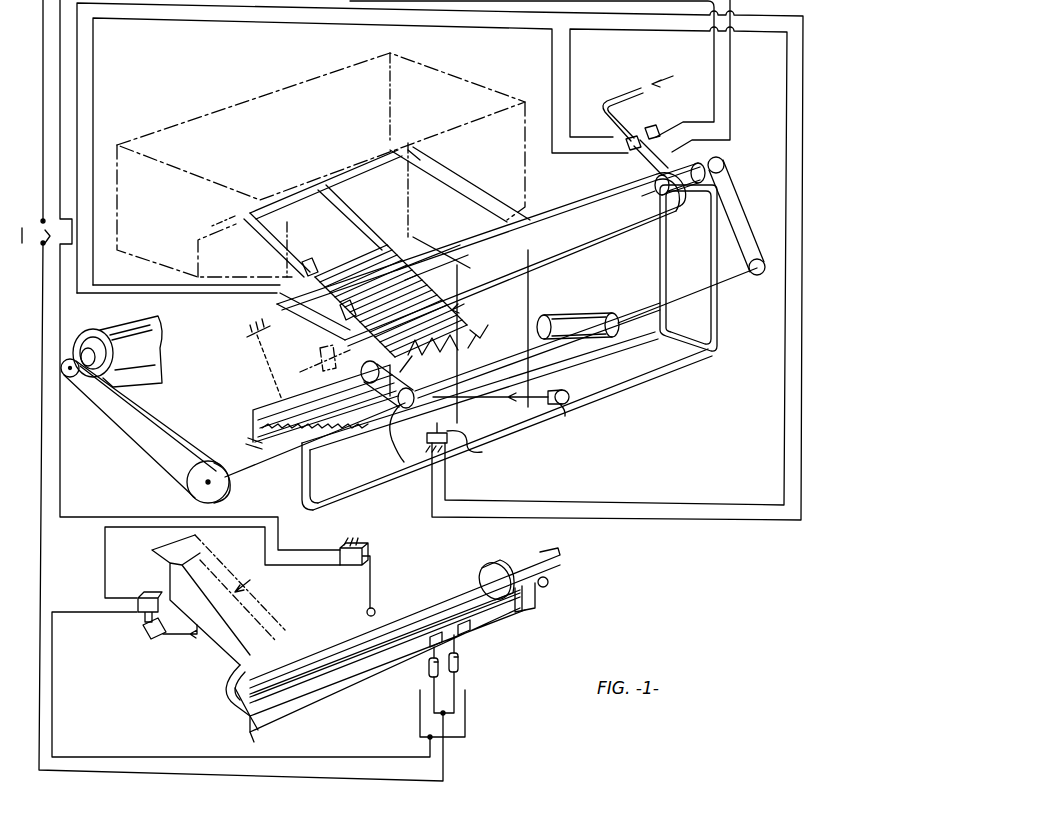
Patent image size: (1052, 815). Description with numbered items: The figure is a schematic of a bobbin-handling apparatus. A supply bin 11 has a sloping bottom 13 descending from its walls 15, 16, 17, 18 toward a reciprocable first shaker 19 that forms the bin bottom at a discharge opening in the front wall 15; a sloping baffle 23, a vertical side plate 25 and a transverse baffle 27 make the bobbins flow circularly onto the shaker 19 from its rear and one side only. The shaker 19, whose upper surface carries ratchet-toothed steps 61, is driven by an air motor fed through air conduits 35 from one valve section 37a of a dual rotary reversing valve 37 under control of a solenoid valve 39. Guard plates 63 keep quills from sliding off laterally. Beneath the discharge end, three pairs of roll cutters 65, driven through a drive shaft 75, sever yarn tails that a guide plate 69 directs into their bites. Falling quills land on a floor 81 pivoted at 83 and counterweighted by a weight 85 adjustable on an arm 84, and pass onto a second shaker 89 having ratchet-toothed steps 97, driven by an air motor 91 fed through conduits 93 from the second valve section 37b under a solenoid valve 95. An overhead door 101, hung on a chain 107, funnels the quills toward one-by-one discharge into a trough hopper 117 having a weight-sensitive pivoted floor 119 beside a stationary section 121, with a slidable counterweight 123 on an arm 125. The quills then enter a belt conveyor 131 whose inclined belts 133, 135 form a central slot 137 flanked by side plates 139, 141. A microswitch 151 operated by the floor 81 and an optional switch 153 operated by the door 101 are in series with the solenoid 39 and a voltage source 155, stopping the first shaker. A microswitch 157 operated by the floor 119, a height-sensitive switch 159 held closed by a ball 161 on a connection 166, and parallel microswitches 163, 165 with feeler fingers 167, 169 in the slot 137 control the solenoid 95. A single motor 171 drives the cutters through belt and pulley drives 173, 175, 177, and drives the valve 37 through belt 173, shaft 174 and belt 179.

The bin 11 is at (292, 90).
The sloping bottom 13 is at (395, 152).
The front wall 15 is at (502, 177).
The wall 16 is at (154, 214).
The wall 17 is at (250, 164).
The wall 18 is at (432, 114).
The first shaker 19 is at (466, 302).
The baffle 23 is at (356, 160).
The side plate 25 is at (320, 235).
The transverse baffle 27 is at (244, 260).
The air conduits 35 is at (537, 213).
The dual section rotary reversing valve 37 is at (688, 196).
The valve section 37a is at (655, 190).
The second valve section 37b is at (672, 160).
The solenoid control valve 39 is at (630, 150).
The ratchet-toothed steps 61 is at (440, 276).
The guard plates 63 is at (362, 215).
The roll cutters 65 is at (450, 366).
The guide plate 69 is at (487, 327).
The drive shaft 75 is at (414, 386).
The floor 81 is at (486, 412).
The pivot 83 is at (480, 448).
The supporting arm 84 is at (556, 386).
The weight 85 is at (576, 410).
The second shaker 89 is at (258, 448).
The air driven motor 91 is at (290, 455).
The conduits 93 is at (615, 350).
The solenoid valve 95 is at (646, 126).
The ratchet-toothed steps 97 is at (330, 445).
The overhead door 101 is at (292, 386).
The supporting chain 107 is at (254, 376).
The hopper 117 is at (258, 590).
The pivotally mounted floor 119 is at (228, 672).
The stationary section 121 is at (200, 640).
The slidable counterweight 123 is at (162, 640).
The arm 125 is at (140, 630).
The belt conveyor 131 is at (446, 570).
The continuous belt 133 is at (392, 612).
The continuous belt 135 is at (549, 582).
The central slot 137 is at (504, 570).
The side plate 139 is at (316, 708).
The side plate 141 is at (528, 614).
The microswitch 151 is at (454, 449).
The sensitive switch 153 is at (320, 350).
The source of voltage 155 is at (56, 234).
The microswitch 157 is at (140, 592).
The height-sensitive switch arrangement 159 is at (372, 558).
The lightweight ball 161 is at (366, 612).
The microswitch 163 is at (421, 714).
The microswitch 165 is at (468, 680).
The depending connection 166 is at (360, 572).
The feeler finger 167 is at (420, 684).
The feeler finger 169 is at (466, 660).
The motor 171 is at (158, 328).
The belt 173 is at (166, 410).
The shaft 174 is at (690, 297).
The belt and pulley drive 175 is at (389, 435).
The belt and pulley drive 177 is at (574, 311).
The belt 179 is at (740, 173).